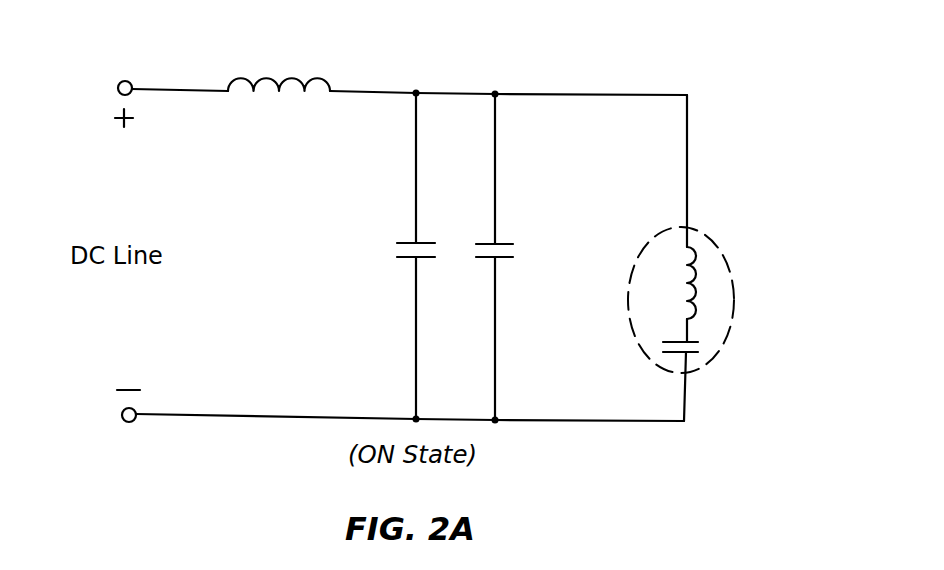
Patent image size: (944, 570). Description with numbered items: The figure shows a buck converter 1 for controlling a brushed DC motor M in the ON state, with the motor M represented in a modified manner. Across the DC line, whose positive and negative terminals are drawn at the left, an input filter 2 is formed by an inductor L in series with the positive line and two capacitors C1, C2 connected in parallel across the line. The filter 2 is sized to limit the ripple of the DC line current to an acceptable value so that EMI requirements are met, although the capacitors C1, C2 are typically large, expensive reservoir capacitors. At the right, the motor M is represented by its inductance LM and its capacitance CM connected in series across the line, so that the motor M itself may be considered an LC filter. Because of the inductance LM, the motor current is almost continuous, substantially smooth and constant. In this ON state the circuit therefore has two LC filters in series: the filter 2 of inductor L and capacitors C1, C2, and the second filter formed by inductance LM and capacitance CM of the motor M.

The buck converter 1 is at (186, 73).
The input filter 2 is at (336, 67).
The inductor L is at (289, 78).
The capacitor C1 is at (394, 256).
The capacitor C2 is at (516, 257).
The motor M is at (705, 233).
The inductance LM is at (689, 285).
The capacitance CM is at (703, 345).